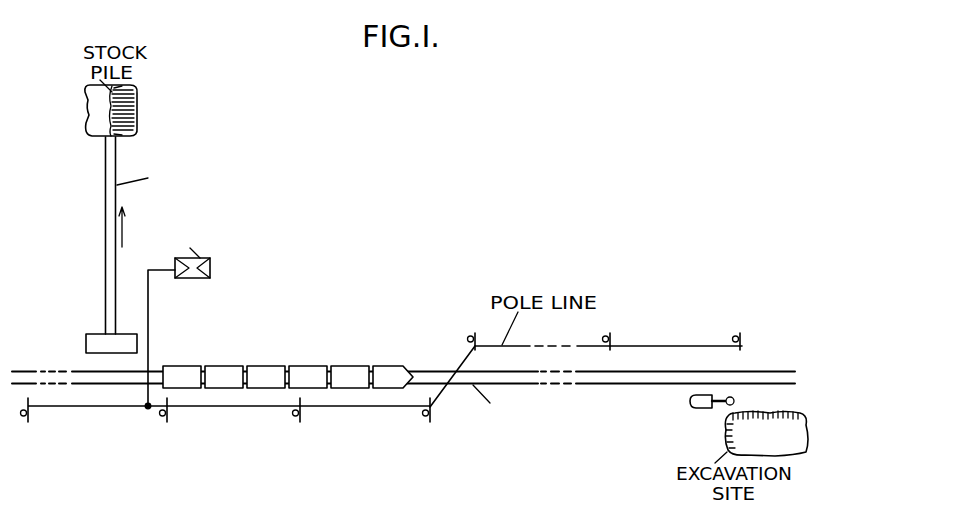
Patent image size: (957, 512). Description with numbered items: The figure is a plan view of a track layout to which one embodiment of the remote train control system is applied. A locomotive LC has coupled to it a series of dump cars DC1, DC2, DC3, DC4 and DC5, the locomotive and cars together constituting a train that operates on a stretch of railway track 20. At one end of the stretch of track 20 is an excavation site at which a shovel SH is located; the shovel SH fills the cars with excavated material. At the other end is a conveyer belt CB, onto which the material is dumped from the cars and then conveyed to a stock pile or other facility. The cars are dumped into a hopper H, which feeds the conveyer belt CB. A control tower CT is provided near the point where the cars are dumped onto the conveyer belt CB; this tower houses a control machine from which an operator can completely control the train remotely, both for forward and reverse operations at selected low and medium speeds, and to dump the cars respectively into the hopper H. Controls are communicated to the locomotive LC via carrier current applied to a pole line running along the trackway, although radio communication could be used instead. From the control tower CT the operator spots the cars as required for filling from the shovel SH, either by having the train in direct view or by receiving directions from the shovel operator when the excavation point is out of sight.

The conveyer belt CB is at (105, 194).
The hopper H is at (98, 335).
The control tower CT is at (212, 269).
The dump car DC1 is at (350, 366).
The dump car DC2 is at (313, 365).
The dump car DC3 is at (265, 366).
The dump car DC4 is at (233, 365).
The dump car DC5 is at (180, 358).
The locomotive LC is at (388, 366).
The railway track 20 is at (492, 401).
The shovel SH is at (690, 405).